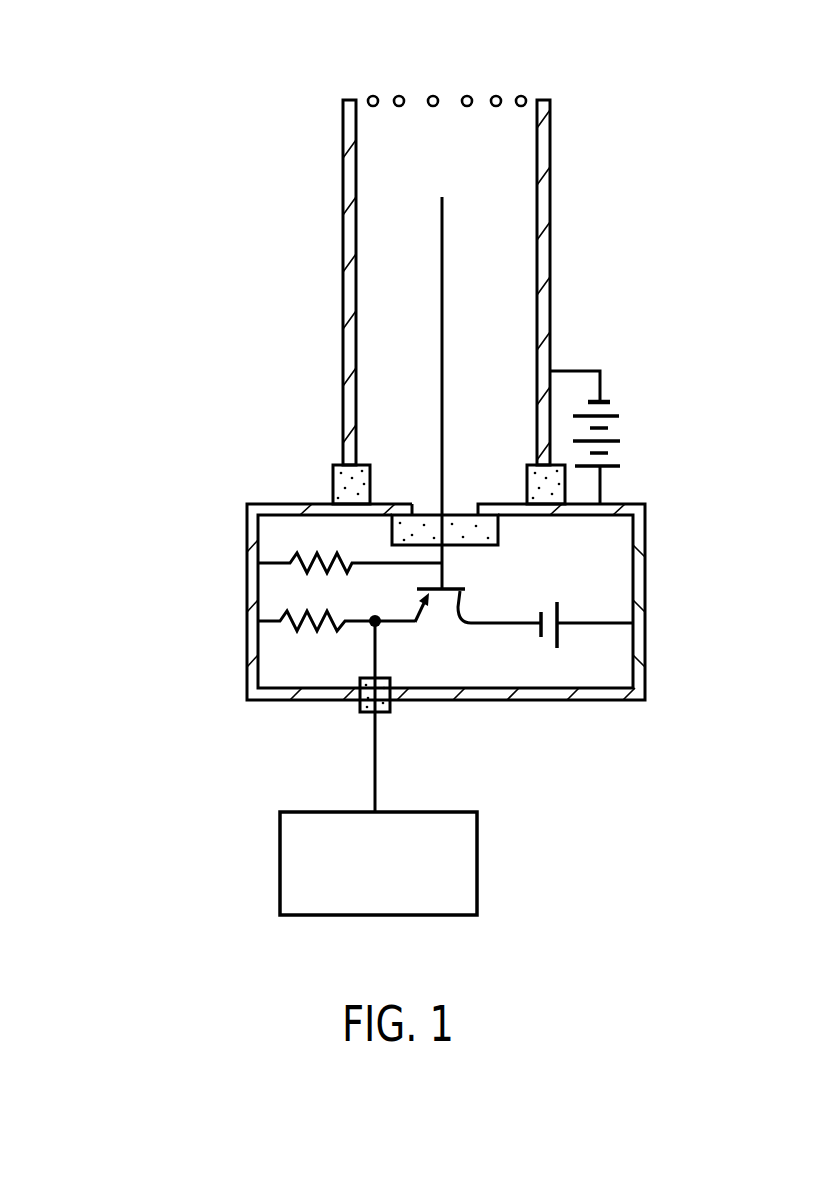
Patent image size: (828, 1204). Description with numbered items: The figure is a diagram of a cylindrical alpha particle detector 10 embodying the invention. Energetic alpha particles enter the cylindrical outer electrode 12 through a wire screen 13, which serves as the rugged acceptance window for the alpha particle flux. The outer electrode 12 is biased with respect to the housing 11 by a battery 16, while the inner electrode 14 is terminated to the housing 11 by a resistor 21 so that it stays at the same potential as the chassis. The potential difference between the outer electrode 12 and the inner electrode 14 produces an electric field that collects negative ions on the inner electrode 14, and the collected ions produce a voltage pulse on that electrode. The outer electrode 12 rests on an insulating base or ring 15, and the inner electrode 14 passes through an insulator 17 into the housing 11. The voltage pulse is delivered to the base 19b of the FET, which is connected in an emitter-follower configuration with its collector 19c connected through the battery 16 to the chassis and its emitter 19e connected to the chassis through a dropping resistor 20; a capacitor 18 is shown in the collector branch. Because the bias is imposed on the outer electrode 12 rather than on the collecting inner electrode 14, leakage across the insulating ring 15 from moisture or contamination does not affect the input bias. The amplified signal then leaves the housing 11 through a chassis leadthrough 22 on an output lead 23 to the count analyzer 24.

The neutron detector 10 is at (234, 238).
The housing 11 is at (247, 600).
The cylindrical outer electrode 12 is at (340, 289).
The wire screen 13 is at (467, 95).
The inner electrode 14 is at (442, 301).
The insulating base or ring 15 is at (331, 478).
The battery 16 is at (620, 453).
The insulator 17 is at (500, 545).
The capacitor 18 is at (562, 642).
The base of FET 19b is at (453, 592).
The transistor collector 19c is at (466, 612).
The transistor emitter 19e is at (430, 606).
The resistor 20 is at (294, 625).
The resistor 21 is at (296, 560).
The chassis leadthrough 22 is at (360, 712).
The output lead 23 is at (373, 787).
The count analyzer 24 is at (280, 855).